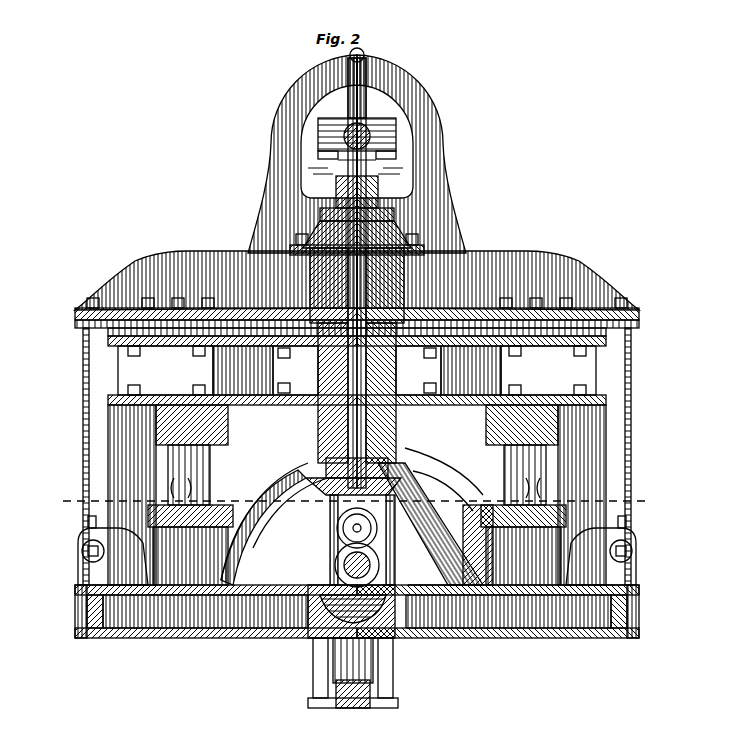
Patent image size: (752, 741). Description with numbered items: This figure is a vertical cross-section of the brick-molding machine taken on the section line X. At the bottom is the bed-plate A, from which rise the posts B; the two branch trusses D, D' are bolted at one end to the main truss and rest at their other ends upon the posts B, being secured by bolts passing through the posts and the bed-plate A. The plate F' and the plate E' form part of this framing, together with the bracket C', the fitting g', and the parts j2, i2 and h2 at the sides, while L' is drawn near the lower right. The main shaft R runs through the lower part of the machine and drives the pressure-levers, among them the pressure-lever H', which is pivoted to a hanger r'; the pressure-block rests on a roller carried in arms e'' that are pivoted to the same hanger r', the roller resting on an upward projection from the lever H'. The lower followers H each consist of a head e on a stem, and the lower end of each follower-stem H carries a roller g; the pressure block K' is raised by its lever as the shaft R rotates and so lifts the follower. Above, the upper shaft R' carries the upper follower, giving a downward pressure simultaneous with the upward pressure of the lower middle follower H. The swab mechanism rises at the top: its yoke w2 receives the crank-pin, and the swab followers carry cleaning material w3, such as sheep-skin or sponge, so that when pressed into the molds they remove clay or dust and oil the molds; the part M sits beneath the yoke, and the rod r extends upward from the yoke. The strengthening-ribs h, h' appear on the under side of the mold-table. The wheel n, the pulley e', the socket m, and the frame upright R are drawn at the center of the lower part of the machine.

The rod r is at (353, 88).
The cleaning material w3 is at (420, 104).
The yoke w2 is at (290, 140).
The upper shaft R' is at (363, 178).
The hub M is at (383, 203).
The branch truss D is at (228, 279).
The branch truss D' is at (486, 279).
The flange plate E' is at (357, 314).
The bolt g' is at (523, 300).
The plate F' is at (372, 412).
The strengthening-ribs h is at (264, 517).
The curved arm h' is at (443, 481).
The roller g is at (347, 487).
The follower H is at (357, 441).
The pressure block K' is at (194, 506).
The bracket L' is at (478, 533).
The section line X is at (347, 505).
The posts B is at (354, 495).
The post j2 is at (78, 513).
The pin i2 is at (74, 544).
The bracket h2 is at (95, 558).
The bracket C' is at (113, 556).
The head e is at (190, 548).
The pulley e' is at (315, 523).
The main shaft R is at (310, 540).
The wheel n is at (376, 556).
The bed-plate A is at (351, 611).
The socket m is at (353, 609).
The arms e'' is at (356, 660).
The hanger r' is at (356, 668).
The pressure-lever H' is at (353, 683).